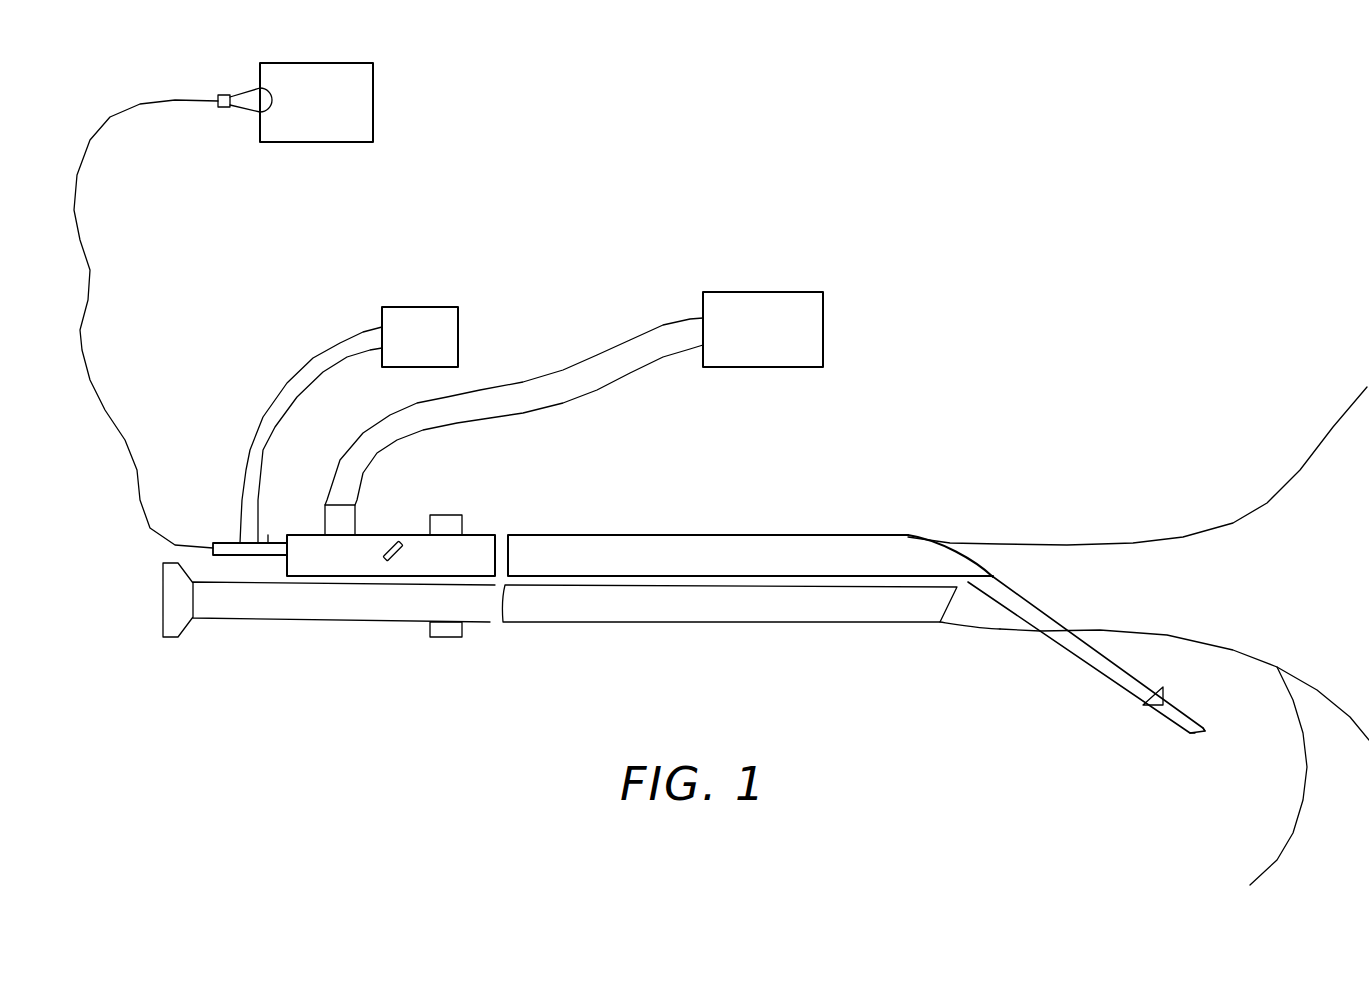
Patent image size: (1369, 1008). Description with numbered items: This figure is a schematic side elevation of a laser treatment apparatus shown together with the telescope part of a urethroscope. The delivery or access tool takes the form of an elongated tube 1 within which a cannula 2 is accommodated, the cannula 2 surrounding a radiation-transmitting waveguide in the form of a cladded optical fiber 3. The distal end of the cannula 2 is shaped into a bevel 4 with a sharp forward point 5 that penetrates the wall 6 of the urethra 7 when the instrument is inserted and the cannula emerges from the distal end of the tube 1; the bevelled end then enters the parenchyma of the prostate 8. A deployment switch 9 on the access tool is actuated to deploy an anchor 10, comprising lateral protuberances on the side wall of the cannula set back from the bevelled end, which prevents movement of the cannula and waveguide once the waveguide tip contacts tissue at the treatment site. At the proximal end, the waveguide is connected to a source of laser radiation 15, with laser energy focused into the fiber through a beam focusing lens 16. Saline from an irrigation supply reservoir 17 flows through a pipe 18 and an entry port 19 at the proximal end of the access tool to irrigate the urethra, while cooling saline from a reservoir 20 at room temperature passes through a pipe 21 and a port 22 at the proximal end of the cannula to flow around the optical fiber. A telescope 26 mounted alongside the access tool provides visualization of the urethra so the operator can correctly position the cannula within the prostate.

The elongated tube 1 is at (680, 535).
The cannula 2 is at (1032, 615).
The cladded optical fiber 3 is at (83, 345).
The bevel 4 is at (1197, 735).
The sharp forward point 5 is at (1207, 729).
The wall 6 is at (980, 630).
The urethra 7 is at (1032, 562).
The prostate 8 is at (1048, 672).
The deployment switch 9 is at (397, 557).
The anchor 10 is at (1143, 708).
The source of laser radiation 15 is at (373, 103).
The beam focusing lens 16 is at (268, 110).
The irrigation supply reservoir 17 is at (783, 295).
The pipe 18 is at (523, 382).
The entry port 19 is at (355, 522).
The reservoir 20 is at (418, 307).
The pipe 21 is at (300, 368).
The port 22 is at (240, 543).
The telescope 26 is at (755, 598).